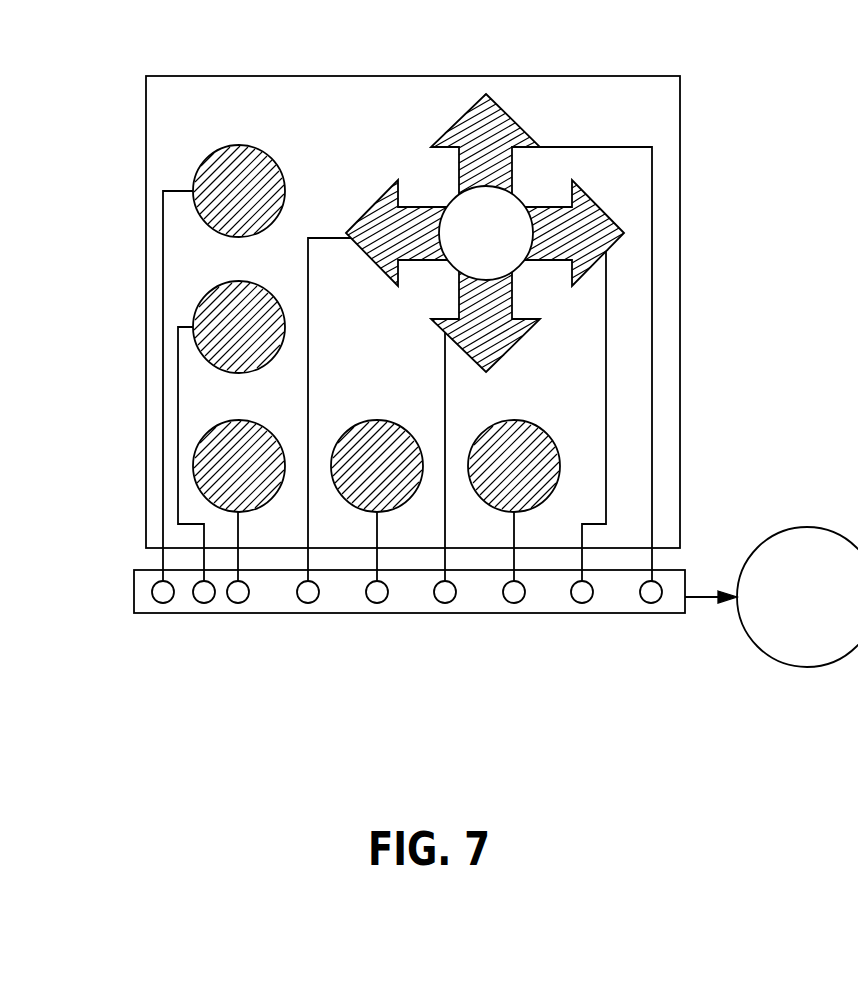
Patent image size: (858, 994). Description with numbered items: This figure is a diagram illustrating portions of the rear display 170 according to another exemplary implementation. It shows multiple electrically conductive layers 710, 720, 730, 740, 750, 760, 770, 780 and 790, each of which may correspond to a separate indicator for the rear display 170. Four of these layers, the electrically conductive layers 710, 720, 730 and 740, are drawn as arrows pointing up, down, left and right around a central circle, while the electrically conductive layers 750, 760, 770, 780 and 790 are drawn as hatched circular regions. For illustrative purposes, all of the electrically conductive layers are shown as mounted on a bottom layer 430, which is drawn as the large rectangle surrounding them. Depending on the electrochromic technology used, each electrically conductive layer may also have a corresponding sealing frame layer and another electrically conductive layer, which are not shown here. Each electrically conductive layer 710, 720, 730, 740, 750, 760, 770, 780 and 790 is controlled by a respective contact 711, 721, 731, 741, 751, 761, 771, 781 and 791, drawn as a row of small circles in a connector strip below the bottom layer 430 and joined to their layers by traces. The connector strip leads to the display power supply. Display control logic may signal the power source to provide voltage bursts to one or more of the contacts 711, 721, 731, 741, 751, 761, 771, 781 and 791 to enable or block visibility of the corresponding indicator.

The rear display 170 is at (471, 413).
The bottom layer 430 is at (677, 125).
The electrically conductive layer 710 is at (513, 120).
The electrically conductive layer 720 is at (516, 343).
The electrically conductive layer 730 is at (376, 207).
The electrically conductive layer 740 is at (592, 203).
The electrically conductive layer 750 is at (231, 146).
The electrically conductive layer 760 is at (240, 282).
The electrically conductive layer 770 is at (230, 422).
The electrically conductive layer 780 is at (375, 421).
The electrically conductive layer 790 is at (513, 421).
The contact 711 is at (647, 603).
The contact 721 is at (441, 603).
The contact 731 is at (304, 603).
The contact 741 is at (577, 603).
The contact 751 is at (158, 603).
The contact 761 is at (199, 603).
The contact 771 is at (234, 603).
The contact 781 is at (372, 603).
The contact 791 is at (510, 603).